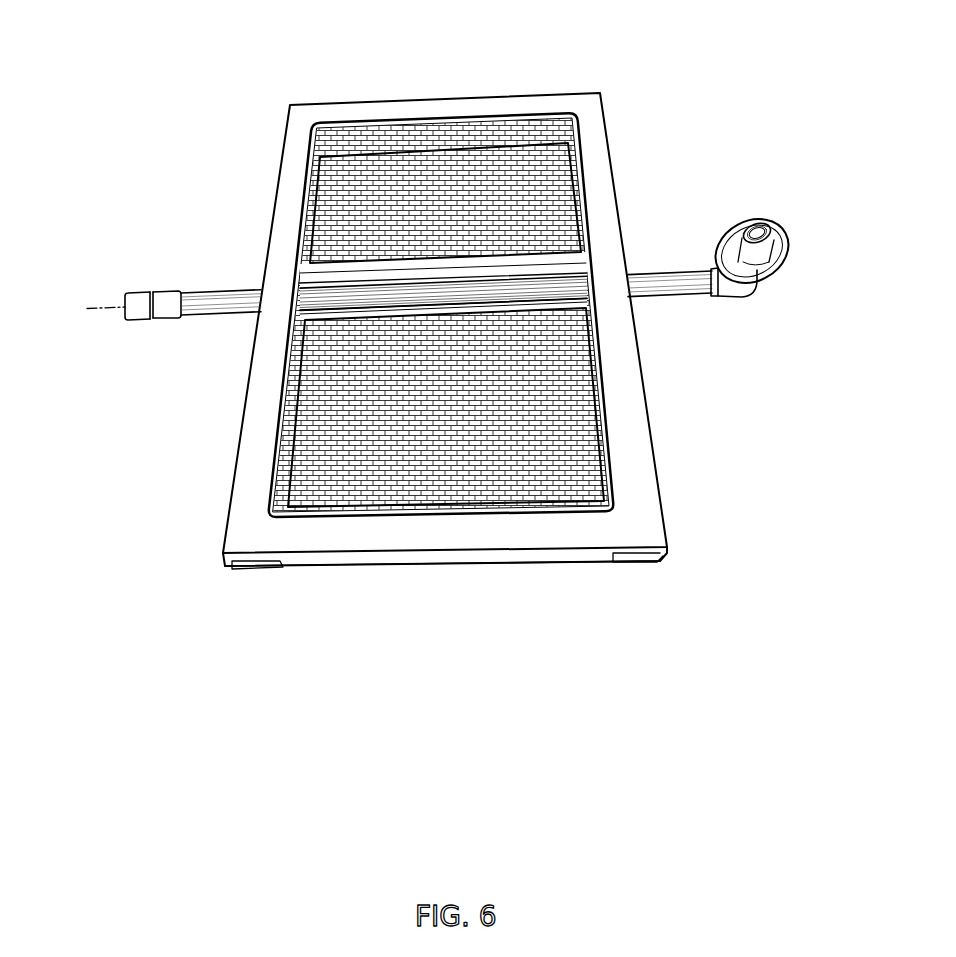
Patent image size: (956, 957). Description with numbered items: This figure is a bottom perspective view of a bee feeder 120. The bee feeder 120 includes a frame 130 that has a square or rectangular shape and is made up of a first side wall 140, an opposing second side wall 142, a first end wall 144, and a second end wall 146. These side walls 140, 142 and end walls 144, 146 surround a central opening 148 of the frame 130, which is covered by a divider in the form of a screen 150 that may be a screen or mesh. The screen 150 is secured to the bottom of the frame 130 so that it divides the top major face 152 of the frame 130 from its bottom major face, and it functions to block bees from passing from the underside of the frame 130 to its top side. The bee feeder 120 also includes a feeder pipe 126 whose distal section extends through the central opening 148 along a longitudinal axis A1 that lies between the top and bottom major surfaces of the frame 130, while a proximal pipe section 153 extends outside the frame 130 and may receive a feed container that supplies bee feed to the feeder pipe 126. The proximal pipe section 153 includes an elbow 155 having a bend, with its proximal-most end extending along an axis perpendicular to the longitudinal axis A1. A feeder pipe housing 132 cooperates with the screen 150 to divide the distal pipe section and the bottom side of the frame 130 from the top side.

The bee feeder 120 is at (452, 321).
The frame 130 is at (395, 105).
The first end wall 144 is at (450, 110).
The screen 150 is at (500, 174).
The feeder pipe 126 is at (661, 283).
The elbow 155 is at (752, 303).
The proximal pipe section 153 is at (732, 320).
The top major face 152 is at (292, 248).
The longitudinal axis A1 is at (106, 308).
The feeder pipe housing 132 is at (289, 305).
The second side wall 142 is at (262, 414).
The first side wall 140 is at (627, 417).
The second end wall 146 is at (434, 538).
The central opening 148 is at (524, 488).